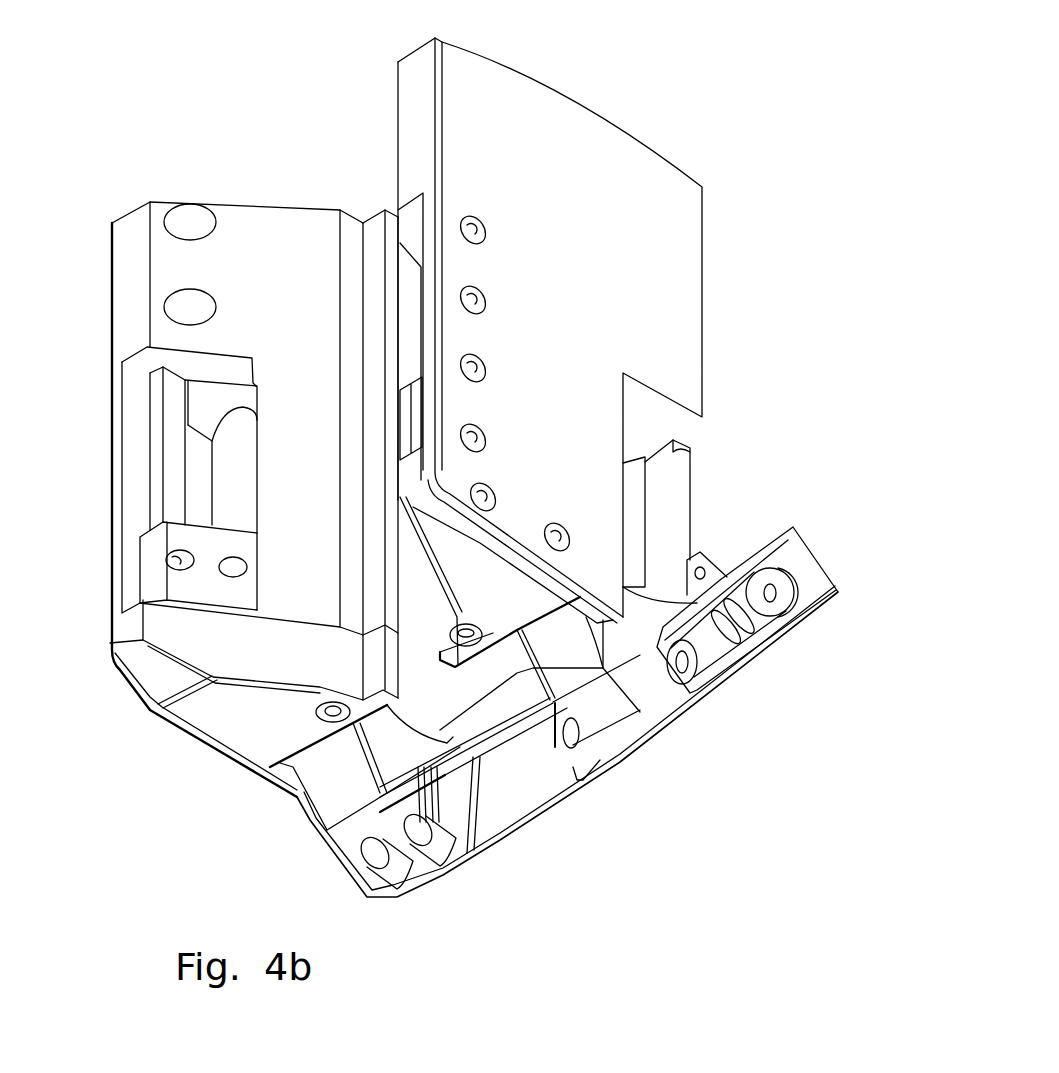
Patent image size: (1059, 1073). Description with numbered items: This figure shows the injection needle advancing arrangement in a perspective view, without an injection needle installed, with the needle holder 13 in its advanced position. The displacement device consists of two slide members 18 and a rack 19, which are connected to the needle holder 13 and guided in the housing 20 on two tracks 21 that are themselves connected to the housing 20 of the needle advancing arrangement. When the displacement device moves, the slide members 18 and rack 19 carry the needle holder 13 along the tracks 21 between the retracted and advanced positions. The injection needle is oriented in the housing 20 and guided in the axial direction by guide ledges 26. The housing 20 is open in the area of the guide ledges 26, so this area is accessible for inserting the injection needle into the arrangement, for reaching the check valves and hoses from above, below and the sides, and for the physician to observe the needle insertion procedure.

The needle holder 13 is at (512, 785).
The slide members 18 is at (413, 420).
The rack 19 is at (633, 535).
The housing 20 is at (645, 210).
The tracks 21 is at (172, 480).
The guide ledges 26 is at (372, 235).